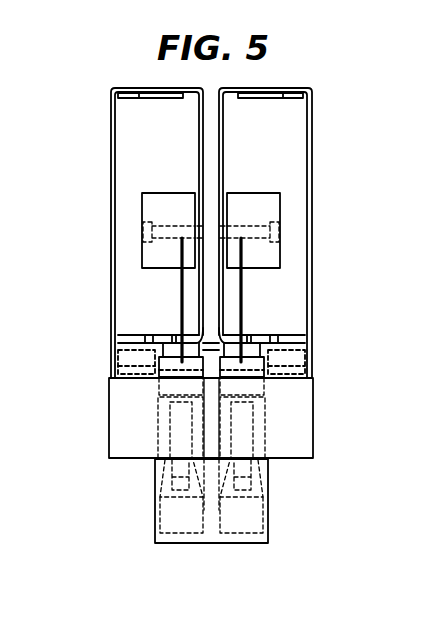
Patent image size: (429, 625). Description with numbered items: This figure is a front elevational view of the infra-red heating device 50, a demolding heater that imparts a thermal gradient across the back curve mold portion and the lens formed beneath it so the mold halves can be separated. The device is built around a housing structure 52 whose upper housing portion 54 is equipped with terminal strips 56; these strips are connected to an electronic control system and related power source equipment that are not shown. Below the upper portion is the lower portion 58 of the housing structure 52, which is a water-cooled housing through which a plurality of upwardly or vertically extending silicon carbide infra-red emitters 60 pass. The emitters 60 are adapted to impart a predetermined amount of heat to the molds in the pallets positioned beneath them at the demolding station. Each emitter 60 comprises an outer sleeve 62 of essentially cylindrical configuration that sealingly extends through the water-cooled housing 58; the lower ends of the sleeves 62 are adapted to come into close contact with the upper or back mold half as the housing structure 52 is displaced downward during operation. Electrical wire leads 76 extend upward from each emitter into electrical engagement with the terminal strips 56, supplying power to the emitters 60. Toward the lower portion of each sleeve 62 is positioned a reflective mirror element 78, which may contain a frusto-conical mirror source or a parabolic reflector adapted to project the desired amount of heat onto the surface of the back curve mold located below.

The infra-red heating device 50 is at (300, 82).
The housing structure 52 is at (313, 265).
The upper housing portion 54 is at (141, 90).
The terminal strips 56 is at (150, 235).
The lower portion 58 is at (313, 432).
The silicon carbide infra-red emitters 60 is at (158, 417).
The outer sleeve 62 is at (155, 487).
The electrical wire leads 76 is at (243, 322).
The reflective mirror element 78 is at (150, 524).